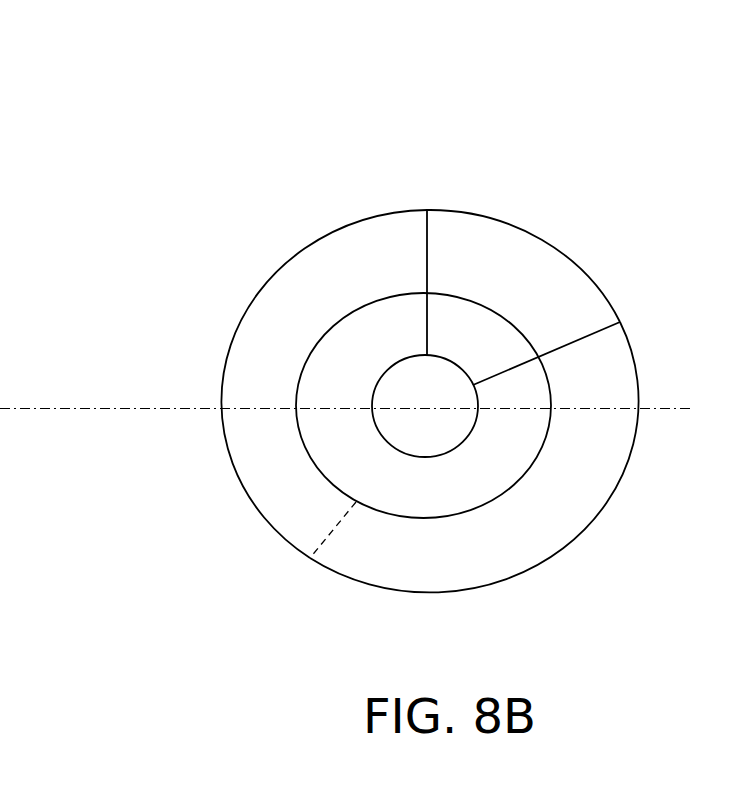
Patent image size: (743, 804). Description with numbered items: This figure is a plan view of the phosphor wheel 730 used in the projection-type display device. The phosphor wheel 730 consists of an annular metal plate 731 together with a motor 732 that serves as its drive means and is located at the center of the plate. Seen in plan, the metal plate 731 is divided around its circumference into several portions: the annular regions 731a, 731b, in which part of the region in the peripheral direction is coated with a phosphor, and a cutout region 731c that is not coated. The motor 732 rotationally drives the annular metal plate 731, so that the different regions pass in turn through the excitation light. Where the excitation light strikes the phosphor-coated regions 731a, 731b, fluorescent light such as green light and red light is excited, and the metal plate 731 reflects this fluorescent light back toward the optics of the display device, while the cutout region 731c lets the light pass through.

The phosphor wheel 730 is at (610, 164).
The metal plate 731 is at (370, 208).
The annular region 731a is at (533, 508).
The annular region 731b is at (257, 475).
The cutout region 731c is at (545, 278).
The motor 732 is at (413, 395).